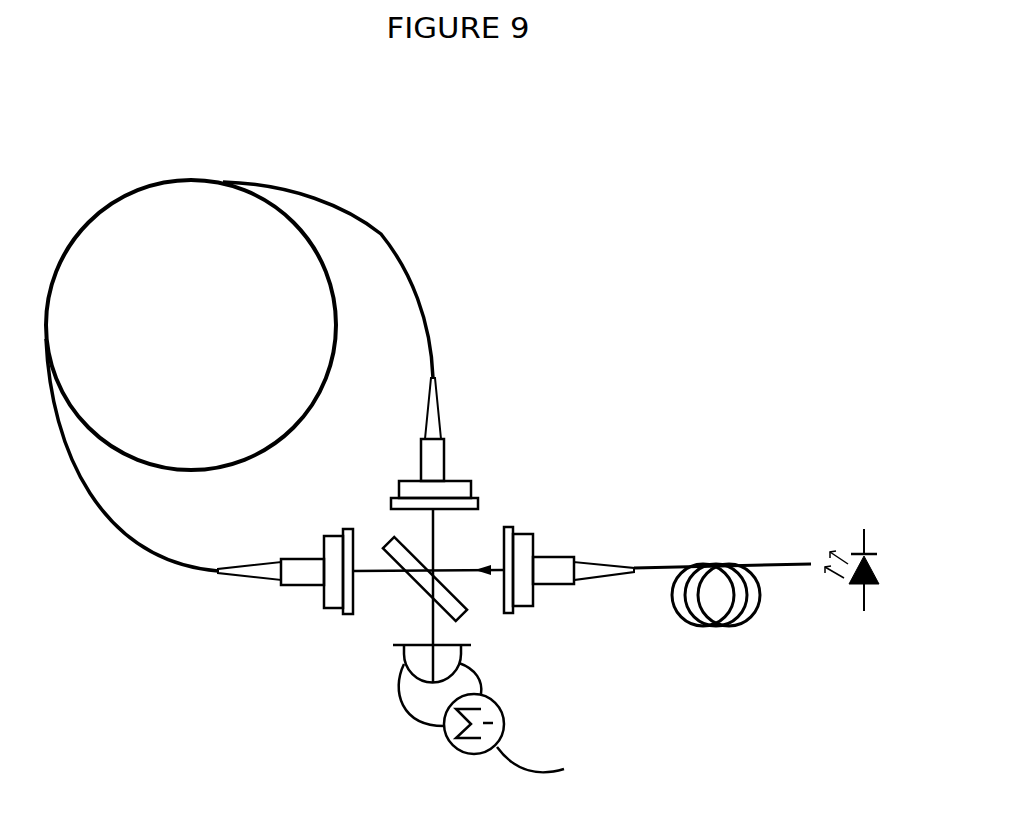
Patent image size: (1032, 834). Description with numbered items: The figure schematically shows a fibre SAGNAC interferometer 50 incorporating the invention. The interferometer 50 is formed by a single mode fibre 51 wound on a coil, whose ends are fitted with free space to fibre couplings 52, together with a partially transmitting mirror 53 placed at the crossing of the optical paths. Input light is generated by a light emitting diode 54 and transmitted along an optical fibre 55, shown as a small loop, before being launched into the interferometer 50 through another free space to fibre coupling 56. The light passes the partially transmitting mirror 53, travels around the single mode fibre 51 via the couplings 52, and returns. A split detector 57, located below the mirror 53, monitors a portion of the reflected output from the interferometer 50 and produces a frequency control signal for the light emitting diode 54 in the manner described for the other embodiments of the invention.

The fibre SAGNAC interferometer 50 is at (381, 232).
The single mode fibre 51 is at (133, 190).
The free space to fibre couplings 52 is at (410, 488).
The partially transmitting mirror 53 is at (423, 580).
The light emitting diode 54 is at (853, 597).
The optical fibre 55 is at (698, 630).
The free space to fibre coupling 56 is at (522, 542).
The split detector 57 is at (443, 653).